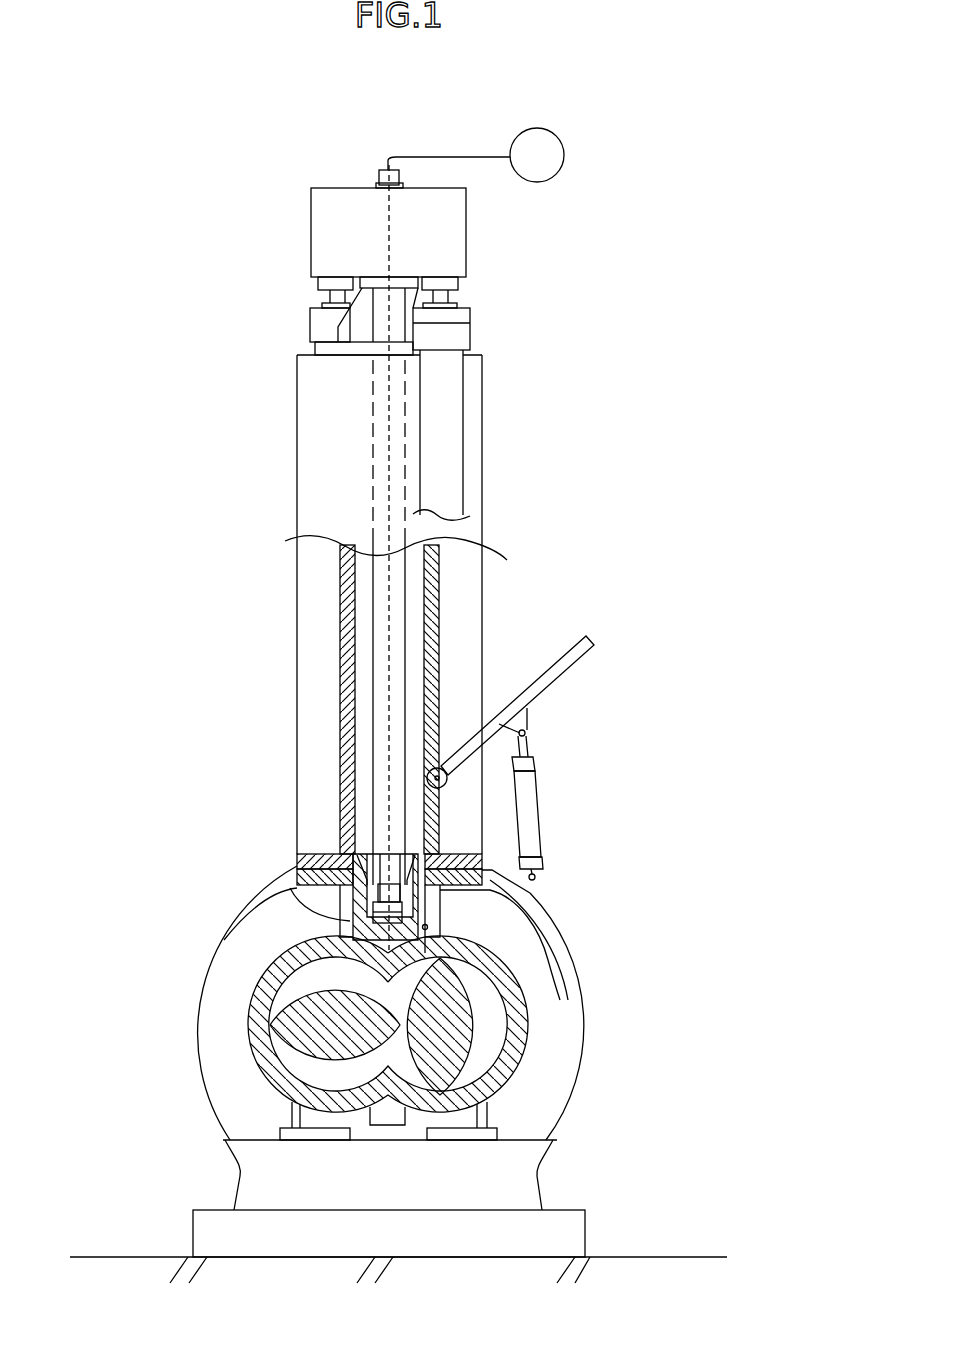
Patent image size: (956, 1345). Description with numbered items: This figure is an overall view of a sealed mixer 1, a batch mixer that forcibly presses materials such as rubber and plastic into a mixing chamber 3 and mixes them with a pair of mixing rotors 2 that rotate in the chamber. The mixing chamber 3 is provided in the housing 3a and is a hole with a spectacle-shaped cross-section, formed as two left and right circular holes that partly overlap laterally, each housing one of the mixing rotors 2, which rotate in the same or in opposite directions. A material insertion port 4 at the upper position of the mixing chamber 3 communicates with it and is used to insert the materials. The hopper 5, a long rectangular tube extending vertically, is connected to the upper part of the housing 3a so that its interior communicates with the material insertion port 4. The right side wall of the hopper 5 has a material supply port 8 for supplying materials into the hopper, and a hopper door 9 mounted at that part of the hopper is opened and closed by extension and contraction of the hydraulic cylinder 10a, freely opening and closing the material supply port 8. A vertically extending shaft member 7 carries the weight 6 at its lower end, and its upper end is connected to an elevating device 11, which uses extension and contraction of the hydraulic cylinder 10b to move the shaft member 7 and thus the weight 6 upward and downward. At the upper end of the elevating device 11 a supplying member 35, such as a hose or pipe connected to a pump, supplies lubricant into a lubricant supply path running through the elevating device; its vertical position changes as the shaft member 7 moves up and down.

The sealed mixer 1 is at (546, 99).
The mixing rotors 2 is at (377, 1033).
The mixing chamber 3 is at (490, 997).
The housing 3a is at (503, 958).
The material insertion port 4 is at (428, 927).
The hopper 5 is at (340, 697).
The weight 6 is at (290, 886).
The shaft member 7 is at (372, 745).
The material supply port 8 is at (445, 568).
The hopper door 9 is at (589, 642).
The hydraulic cylinder 10a is at (530, 815).
The hydraulic cylinder 10b is at (448, 420).
The elevating device 11 is at (468, 253).
The supplying member 35 is at (388, 160).